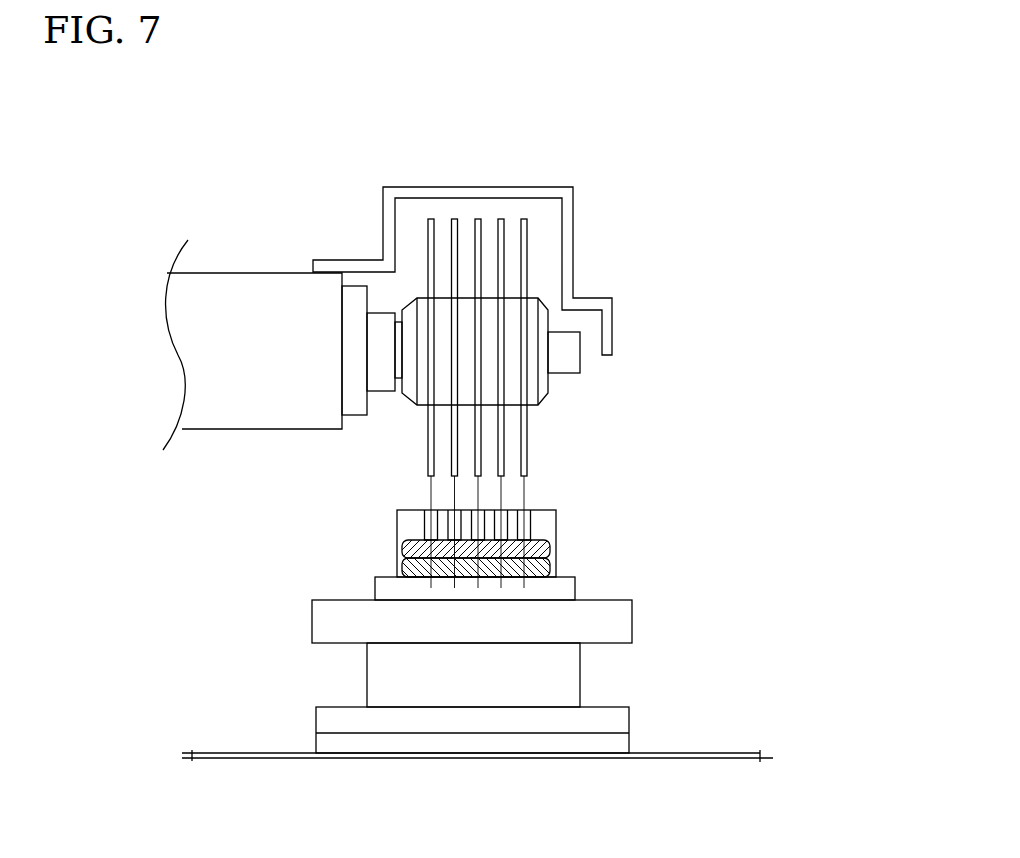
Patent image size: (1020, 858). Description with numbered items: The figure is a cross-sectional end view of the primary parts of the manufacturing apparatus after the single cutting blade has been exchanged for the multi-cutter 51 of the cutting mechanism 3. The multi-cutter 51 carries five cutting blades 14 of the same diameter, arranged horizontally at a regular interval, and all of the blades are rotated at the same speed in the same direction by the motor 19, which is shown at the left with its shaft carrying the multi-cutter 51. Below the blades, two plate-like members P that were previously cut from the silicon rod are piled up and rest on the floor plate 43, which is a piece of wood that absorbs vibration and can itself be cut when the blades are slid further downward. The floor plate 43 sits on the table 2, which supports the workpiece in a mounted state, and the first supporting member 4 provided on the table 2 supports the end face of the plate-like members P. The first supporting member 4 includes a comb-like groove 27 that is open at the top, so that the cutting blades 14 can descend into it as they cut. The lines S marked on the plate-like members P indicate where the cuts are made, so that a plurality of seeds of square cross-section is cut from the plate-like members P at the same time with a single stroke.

The motor 19 is at (225, 297).
The cutting mechanism 3 is at (628, 262).
The multi-cutter 51 is at (580, 380).
The cutting blade 14 is at (480, 447).
The first supporting member 4 is at (397, 520).
The plate-like member P is at (552, 567).
The comb-like groove 27 is at (501, 522).
The streets S is at (393, 552).
The floor plate 43 is at (573, 587).
The table 2 is at (633, 615).